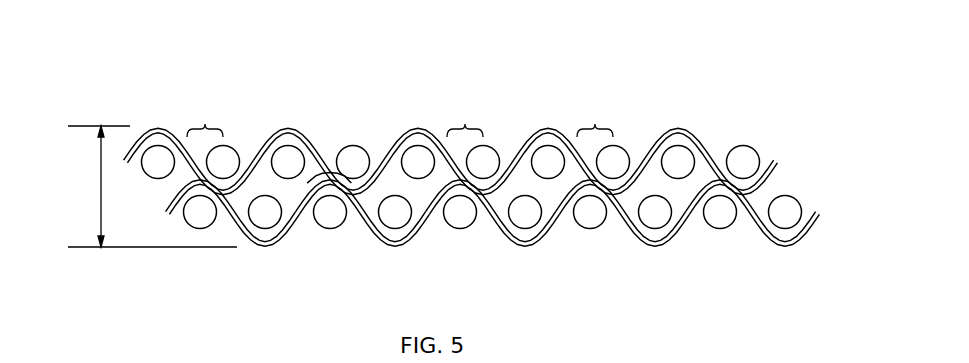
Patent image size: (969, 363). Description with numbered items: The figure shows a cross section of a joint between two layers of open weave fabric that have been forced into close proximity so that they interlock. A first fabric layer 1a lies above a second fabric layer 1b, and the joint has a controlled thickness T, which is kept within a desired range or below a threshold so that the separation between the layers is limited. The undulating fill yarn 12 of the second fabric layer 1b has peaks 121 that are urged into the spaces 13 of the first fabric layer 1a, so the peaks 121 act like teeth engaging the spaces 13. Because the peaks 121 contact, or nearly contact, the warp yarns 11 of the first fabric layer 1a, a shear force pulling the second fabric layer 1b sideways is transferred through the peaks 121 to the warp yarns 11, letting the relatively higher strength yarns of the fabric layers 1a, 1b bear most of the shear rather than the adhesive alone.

The first fabric layer 1a is at (489, 132).
The second fabric layer 1b is at (512, 192).
The warp yarns 11 is at (742, 110).
The fill yarn 12 is at (512, 173).
The peaks 121 is at (350, 180).
The spaces 13 is at (400, 119).
The joint thickness T is at (152, 186).